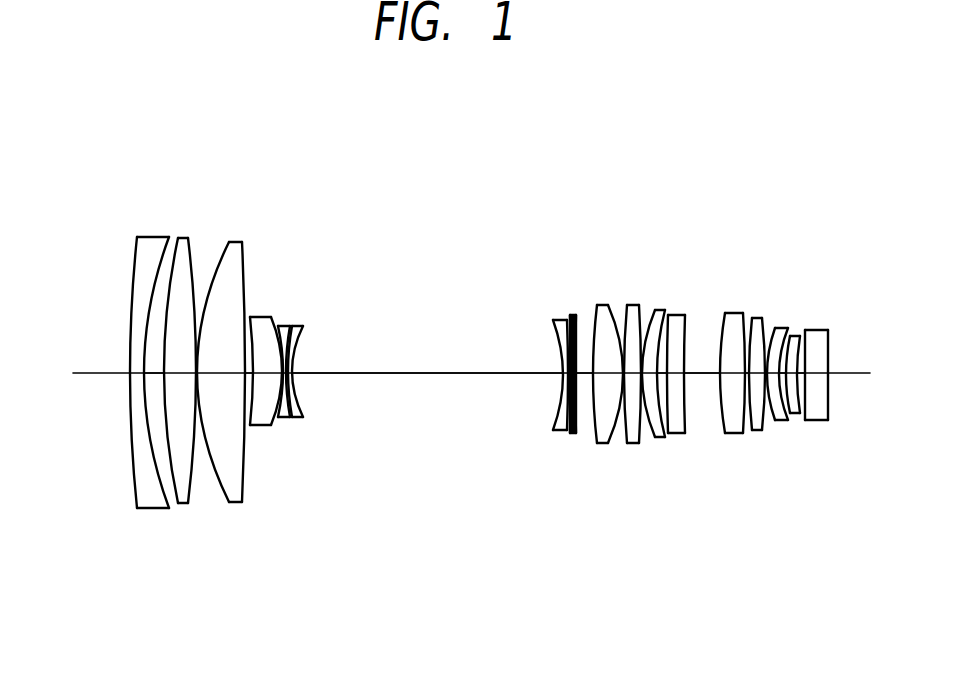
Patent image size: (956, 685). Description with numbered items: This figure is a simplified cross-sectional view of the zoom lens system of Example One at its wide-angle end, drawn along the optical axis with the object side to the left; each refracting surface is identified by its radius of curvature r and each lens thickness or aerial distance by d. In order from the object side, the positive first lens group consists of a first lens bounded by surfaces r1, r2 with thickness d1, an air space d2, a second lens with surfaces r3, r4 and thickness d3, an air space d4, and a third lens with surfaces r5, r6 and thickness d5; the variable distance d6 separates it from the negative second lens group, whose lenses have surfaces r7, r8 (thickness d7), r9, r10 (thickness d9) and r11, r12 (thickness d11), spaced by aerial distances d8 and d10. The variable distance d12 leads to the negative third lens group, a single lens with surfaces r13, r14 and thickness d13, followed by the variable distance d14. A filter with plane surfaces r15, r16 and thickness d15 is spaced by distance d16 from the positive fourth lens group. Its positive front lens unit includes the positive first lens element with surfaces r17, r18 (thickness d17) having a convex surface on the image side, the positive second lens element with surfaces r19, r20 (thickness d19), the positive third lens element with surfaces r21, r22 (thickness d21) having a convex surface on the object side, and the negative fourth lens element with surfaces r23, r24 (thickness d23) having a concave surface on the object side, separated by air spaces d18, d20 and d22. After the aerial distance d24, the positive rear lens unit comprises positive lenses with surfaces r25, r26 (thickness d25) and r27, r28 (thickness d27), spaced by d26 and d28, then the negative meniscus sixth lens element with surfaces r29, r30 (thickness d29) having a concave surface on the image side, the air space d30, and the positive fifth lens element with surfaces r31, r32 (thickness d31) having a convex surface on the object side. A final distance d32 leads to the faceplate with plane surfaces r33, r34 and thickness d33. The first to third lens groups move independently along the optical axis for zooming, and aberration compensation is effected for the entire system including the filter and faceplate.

The first lens surface r1 is at (137, 237).
The second lens surface r2 is at (168, 237).
The third lens surface r3 is at (178, 238).
The fourth lens surface r4 is at (188, 238).
The fifth lens surface r5 is at (229, 242).
The sixth lens surface r6 is at (242, 242).
The seventh lens surface r7 is at (250, 317).
The eighth lens surface r8 is at (271, 317).
The ninth lens surface r9 is at (278, 326).
The tenth lens surface r10 is at (290, 326).
The eleventh lens surface r11 is at (292, 326).
The twelfth lens surface r12 is at (303, 326).
The thirteenth lens surface r13 is at (553, 320).
The fourteenth lens surface r14 is at (567, 320).
The fifteenth surface (filter) r15 is at (571, 316).
The sixteenth surface (filter) r16 is at (575, 316).
The seventeenth lens surface r17 is at (597, 305).
The eighteenth lens surface r18 is at (608, 305).
The nineteenth lens surface r19 is at (627, 305).
The twentieth lens surface r20 is at (639, 305).
The twenty-first lens surface r21 is at (655, 310).
The twenty-second lens surface r22 is at (665, 310).
The twenty-third lens surface r23 is at (668, 315).
The twenty-fourth lens surface r24 is at (685, 315).
The twenty-fifth lens surface r25 is at (725, 313).
The twenty-sixth lens surface r26 is at (742, 313).
The twenty-seventh lens surface r27 is at (752, 318).
The twenty-eighth lens surface r28 is at (762, 318).
The twenty-ninth lens surface r29 is at (775, 328).
The thirtieth lens surface r30 is at (788, 328).
The thirty-first lens surface r31 is at (790, 336).
The thirty-second lens surface r32 is at (800, 336).
The thirty-third surface (faceplate) r33 is at (805, 330).
The thirty-fourth surface (faceplate) r34 is at (828, 330).
The first lens thickness d1 is at (134, 392).
The first aerial distance d2 is at (160, 385).
The second lens thickness d3 is at (187, 385).
The second aerial distance d4 is at (204, 385).
The third lens thickness d5 is at (223, 385).
The variable aerial distance d6 is at (249, 385).
The fourth lens thickness d7 is at (266, 385).
The aerial distance d8 is at (280, 385).
The fifth lens thickness d9 is at (285, 385).
The aerial distance d10 is at (290, 385).
The sixth lens thickness d11 is at (298, 385).
The variable aerial distance d12 is at (385, 378).
The seventh lens thickness d13 is at (565, 382).
The variable aerial distance d14 is at (576, 382).
The filter thickness d15 is at (582, 382).
The aerial distance d16 is at (596, 382).
The first lens element thickness d17 is at (613, 382).
The aerial distance d18 is at (626, 382).
The second lens element thickness d19 is at (630, 382).
The aerial distance d20 is at (642, 382).
The third lens element thickness d21 is at (660, 382).
The aerial distance d22 is at (678, 382).
The fourth lens element thickness d23 is at (692, 382).
The aerial distance d24 is at (702, 382).
The lens thickness d25 is at (733, 382).
The aerial distance d26 is at (747, 382).
The lens thickness d27 is at (757, 382).
The aerial distance d28 is at (767, 382).
The sixth lens element thickness d29 is at (774, 382).
The aerial distance d30 is at (783, 382).
The fifth lens element thickness d31 is at (793, 382).
The aerial distance d32 is at (801, 382).
The faceplate thickness d33 is at (816, 382).